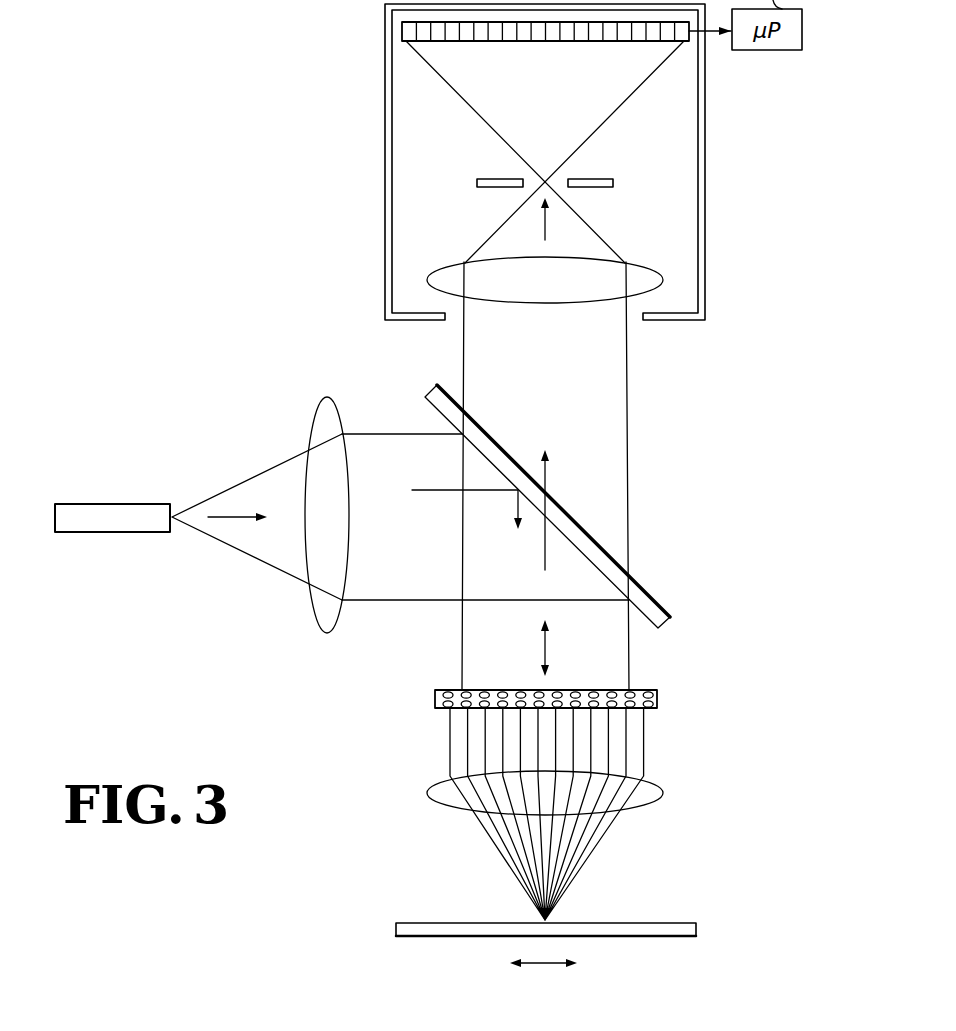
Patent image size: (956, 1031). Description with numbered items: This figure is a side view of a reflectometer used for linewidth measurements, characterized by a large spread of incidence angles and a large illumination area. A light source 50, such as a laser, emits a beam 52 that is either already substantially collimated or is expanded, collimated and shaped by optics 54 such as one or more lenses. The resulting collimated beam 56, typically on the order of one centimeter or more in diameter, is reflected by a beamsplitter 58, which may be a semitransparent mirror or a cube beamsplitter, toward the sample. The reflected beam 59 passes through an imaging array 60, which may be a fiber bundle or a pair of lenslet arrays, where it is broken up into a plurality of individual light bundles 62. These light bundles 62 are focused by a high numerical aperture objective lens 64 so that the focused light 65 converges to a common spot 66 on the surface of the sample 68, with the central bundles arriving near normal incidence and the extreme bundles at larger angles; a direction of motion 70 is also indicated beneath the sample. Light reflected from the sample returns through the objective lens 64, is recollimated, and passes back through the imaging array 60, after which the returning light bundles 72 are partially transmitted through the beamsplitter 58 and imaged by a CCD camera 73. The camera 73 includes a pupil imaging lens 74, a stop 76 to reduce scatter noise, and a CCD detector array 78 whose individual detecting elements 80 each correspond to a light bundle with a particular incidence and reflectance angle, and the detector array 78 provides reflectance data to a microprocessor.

The light source 50 is at (98, 503).
The beam 52 is at (235, 515).
The optics 54 is at (315, 432).
The collimated beam 56 is at (430, 490).
The beamsplitter 58 is at (430, 390).
The beam 59 is at (545, 645).
The imaging array 60 is at (435, 698).
The light bundles 62 is at (495, 745).
The objective lens 64 is at (428, 792).
The focused light 65 is at (596, 843).
The common spot 66 is at (538, 918).
The sample 68 is at (425, 922).
The direction of relative motion 70 is at (540, 966).
The light bundles 72 is at (545, 537).
The CCD camera 73 is at (385, 205).
The pupil imaging lens 74 is at (663, 283).
The stop 76 is at (613, 183).
The detector array 78 is at (402, 32).
The detecting elements 80 is at (466, 33).